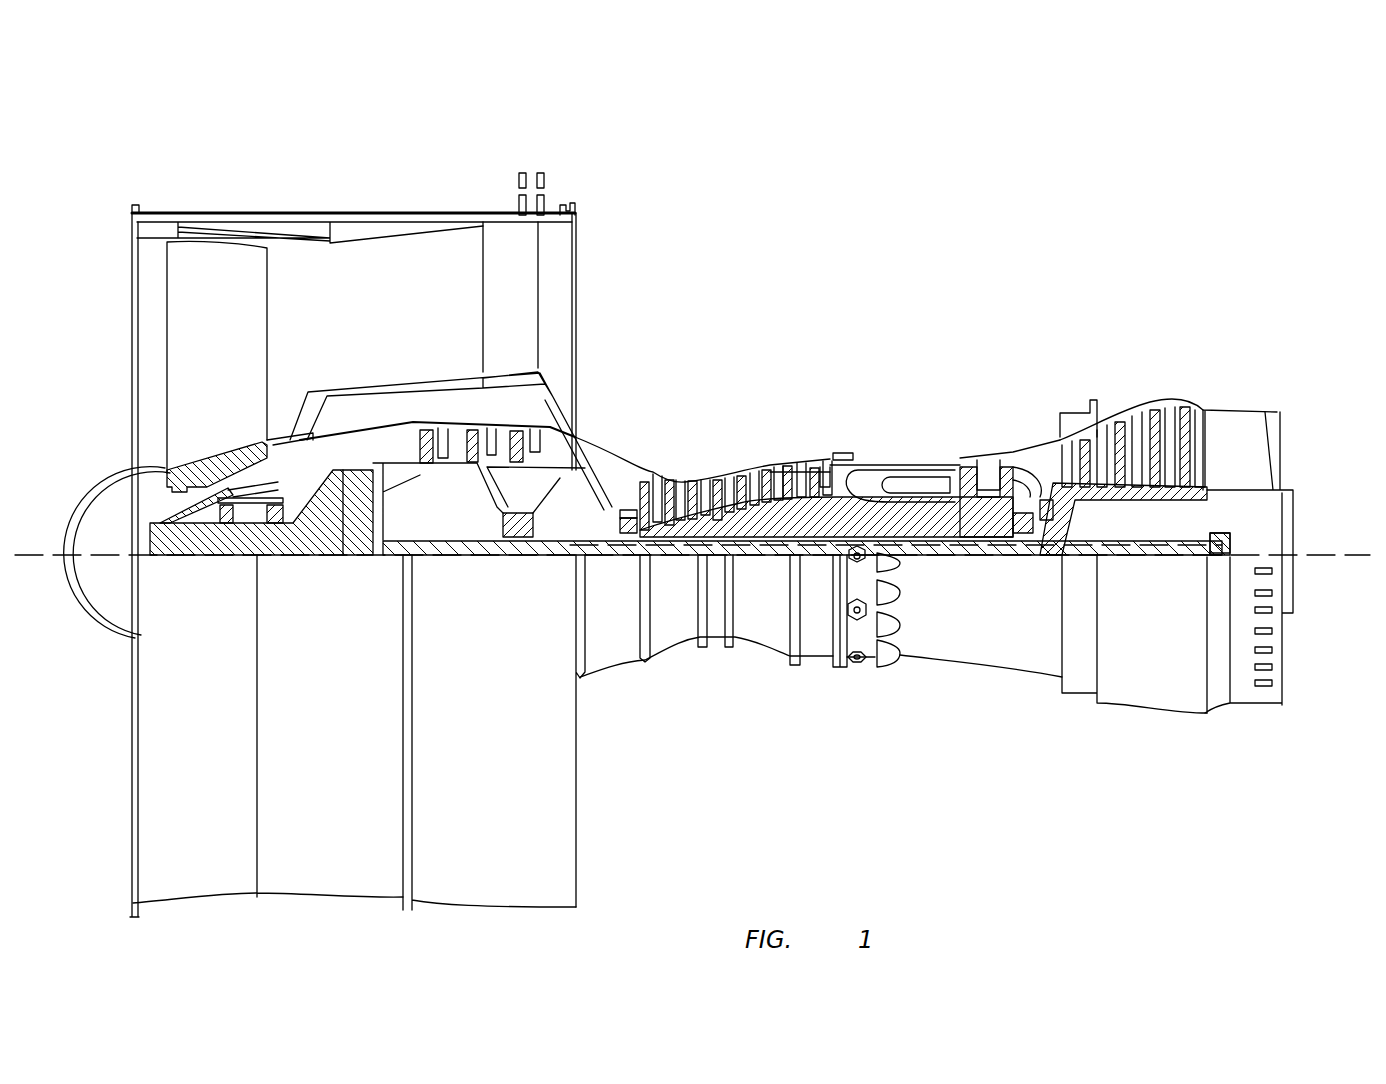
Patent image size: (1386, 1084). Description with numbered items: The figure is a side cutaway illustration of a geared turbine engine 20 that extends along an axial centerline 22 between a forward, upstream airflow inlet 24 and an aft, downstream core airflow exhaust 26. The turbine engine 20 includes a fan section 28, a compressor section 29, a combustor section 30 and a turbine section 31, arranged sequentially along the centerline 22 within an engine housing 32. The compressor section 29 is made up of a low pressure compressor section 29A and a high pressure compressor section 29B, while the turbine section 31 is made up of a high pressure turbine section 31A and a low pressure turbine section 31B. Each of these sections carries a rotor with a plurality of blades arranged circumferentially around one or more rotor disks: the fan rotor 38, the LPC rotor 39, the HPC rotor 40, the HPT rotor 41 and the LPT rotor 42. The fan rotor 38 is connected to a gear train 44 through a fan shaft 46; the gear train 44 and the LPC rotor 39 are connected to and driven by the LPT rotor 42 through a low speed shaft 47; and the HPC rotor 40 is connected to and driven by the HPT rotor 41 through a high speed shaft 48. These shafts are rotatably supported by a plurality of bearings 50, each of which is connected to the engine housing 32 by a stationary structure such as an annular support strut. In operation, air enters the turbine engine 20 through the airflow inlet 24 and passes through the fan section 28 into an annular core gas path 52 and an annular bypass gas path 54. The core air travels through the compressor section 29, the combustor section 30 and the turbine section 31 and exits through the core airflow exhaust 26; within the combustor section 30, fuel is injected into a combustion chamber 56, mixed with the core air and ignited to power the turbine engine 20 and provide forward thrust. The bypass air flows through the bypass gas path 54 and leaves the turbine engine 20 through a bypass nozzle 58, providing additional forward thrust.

The geared turbine engine 20 is at (1148, 241).
The axial centerline 22 is at (1362, 560).
The airflow inlet 24 is at (132, 296).
The core airflow exhaust 26 is at (1283, 445).
The fan section 28 is at (135, 185).
The compressor section 29 is at (818, 110).
The low pressure compressor section 29A is at (573, 175).
The high pressure compressor section 29B is at (605, 383).
The combustor section 30 is at (950, 383).
The turbine section 31 is at (960, 308).
The high pressure turbine section 31A is at (1038, 383).
The low pressure turbine section 31B is at (1238, 383).
The engine housing 32 is at (589, 692).
The fan rotor 38 is at (162, 475).
The LPC rotor 39 is at (477, 493).
The HPC rotor 40 is at (757, 512).
The HPT rotor 41 is at (985, 530).
The LPT rotor 42 is at (1143, 495).
The gear train 44 is at (357, 558).
The fan shaft 46 is at (175, 560).
The low speed shaft 47 is at (1155, 558).
The high speed shaft 48 is at (917, 535).
The bearings 50 is at (270, 522).
The core gas path 52 is at (596, 476).
The bypass gas path 54 is at (407, 312).
The combustion chamber 56 is at (903, 485).
The bypass nozzle 58 is at (576, 283).